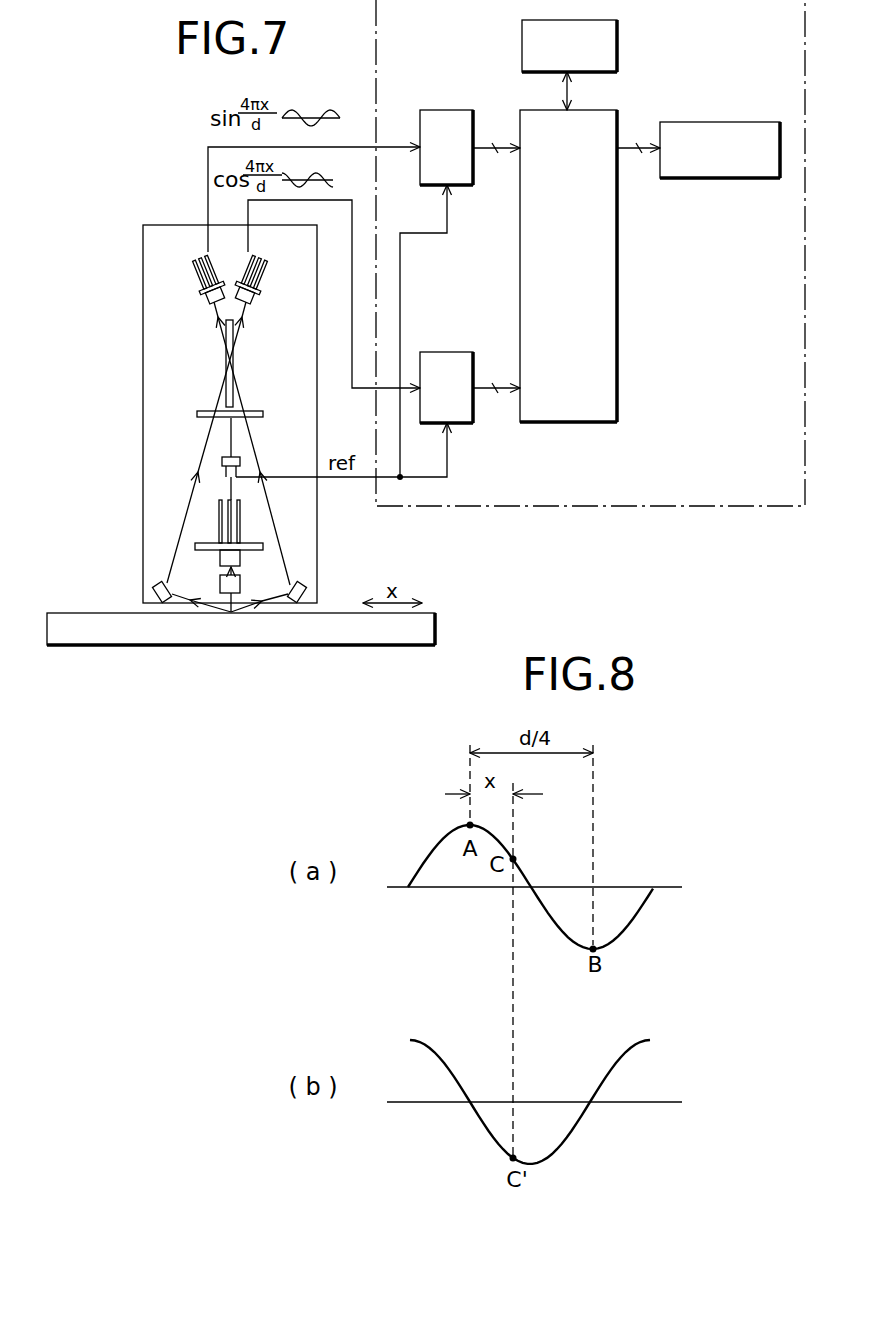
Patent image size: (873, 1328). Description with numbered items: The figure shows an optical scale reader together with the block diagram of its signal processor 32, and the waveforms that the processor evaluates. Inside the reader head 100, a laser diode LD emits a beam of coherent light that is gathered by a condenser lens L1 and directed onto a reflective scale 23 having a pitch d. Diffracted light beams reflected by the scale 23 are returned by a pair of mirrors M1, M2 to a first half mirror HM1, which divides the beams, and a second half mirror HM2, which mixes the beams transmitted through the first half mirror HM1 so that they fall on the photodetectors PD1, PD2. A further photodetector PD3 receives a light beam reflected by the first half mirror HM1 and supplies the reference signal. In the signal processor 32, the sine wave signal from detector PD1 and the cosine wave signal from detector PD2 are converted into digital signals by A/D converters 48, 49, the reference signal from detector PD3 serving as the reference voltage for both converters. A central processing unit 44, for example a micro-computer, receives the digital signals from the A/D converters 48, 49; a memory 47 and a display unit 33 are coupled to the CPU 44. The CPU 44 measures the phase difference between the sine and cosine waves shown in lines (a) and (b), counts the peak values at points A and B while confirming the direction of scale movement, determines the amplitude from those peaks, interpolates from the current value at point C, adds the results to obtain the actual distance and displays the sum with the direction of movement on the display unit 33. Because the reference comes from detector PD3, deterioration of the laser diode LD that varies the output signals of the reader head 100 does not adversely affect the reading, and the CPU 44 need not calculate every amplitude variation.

The reader head 100 is at (152, 373).
The A/D converter 48 is at (443, 113).
The A/D converter 49 is at (445, 353).
The memory 47 is at (617, 42).
The display unit 33 is at (722, 123).
The central processing unit 44 is at (612, 282).
The signal processor 32 is at (588, 508).
The reflective scale 23 is at (246, 646).
The photodetector PD1 is at (191, 288).
The photodetector PD2 is at (268, 288).
The photodetector PD3 is at (222, 460).
The first half mirror HM1 is at (253, 410).
The second half mirror HM2 is at (228, 365).
The laser diode LD is at (233, 533).
The condenser lens L1 is at (220, 582).
The mirror M1 is at (308, 592).
The mirror M2 is at (153, 590).